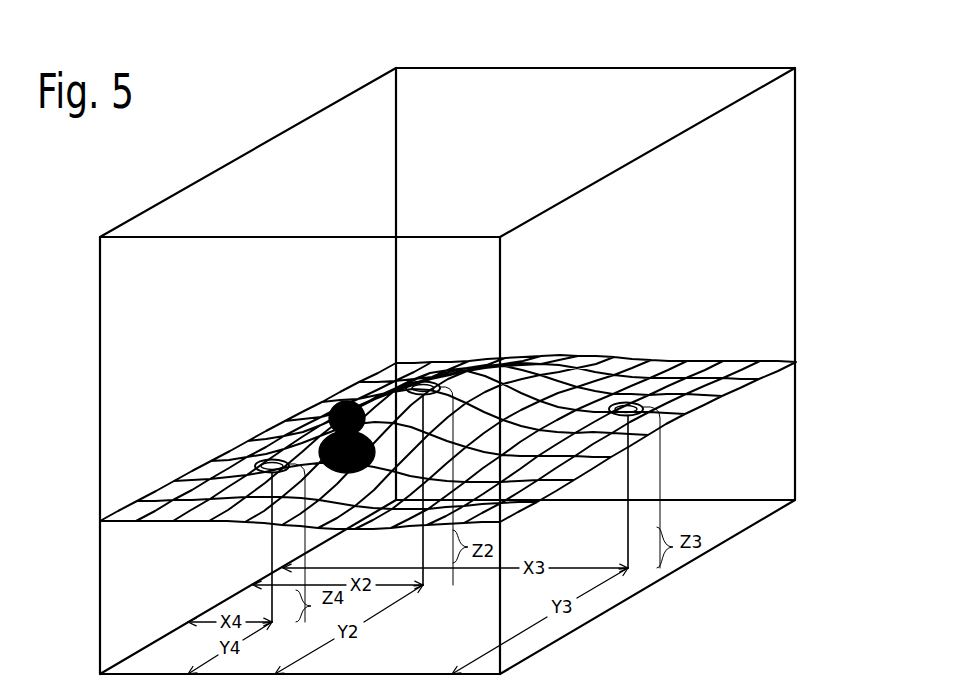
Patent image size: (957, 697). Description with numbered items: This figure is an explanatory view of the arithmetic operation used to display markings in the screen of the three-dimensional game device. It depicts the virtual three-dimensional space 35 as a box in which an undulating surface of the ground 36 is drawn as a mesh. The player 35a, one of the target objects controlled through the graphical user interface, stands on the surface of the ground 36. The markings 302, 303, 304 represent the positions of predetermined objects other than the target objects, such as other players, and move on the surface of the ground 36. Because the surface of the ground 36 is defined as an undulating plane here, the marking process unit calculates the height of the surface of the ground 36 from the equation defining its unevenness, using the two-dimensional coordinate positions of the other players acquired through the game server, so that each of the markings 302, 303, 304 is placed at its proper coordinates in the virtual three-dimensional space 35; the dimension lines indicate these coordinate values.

The virtual 3D space 35 is at (582, 76).
The player 35a is at (337, 407).
The surface of the ground 36 is at (697, 390).
The marking 302 is at (426, 381).
The marking 303 is at (627, 402).
The marking 304 is at (270, 459).